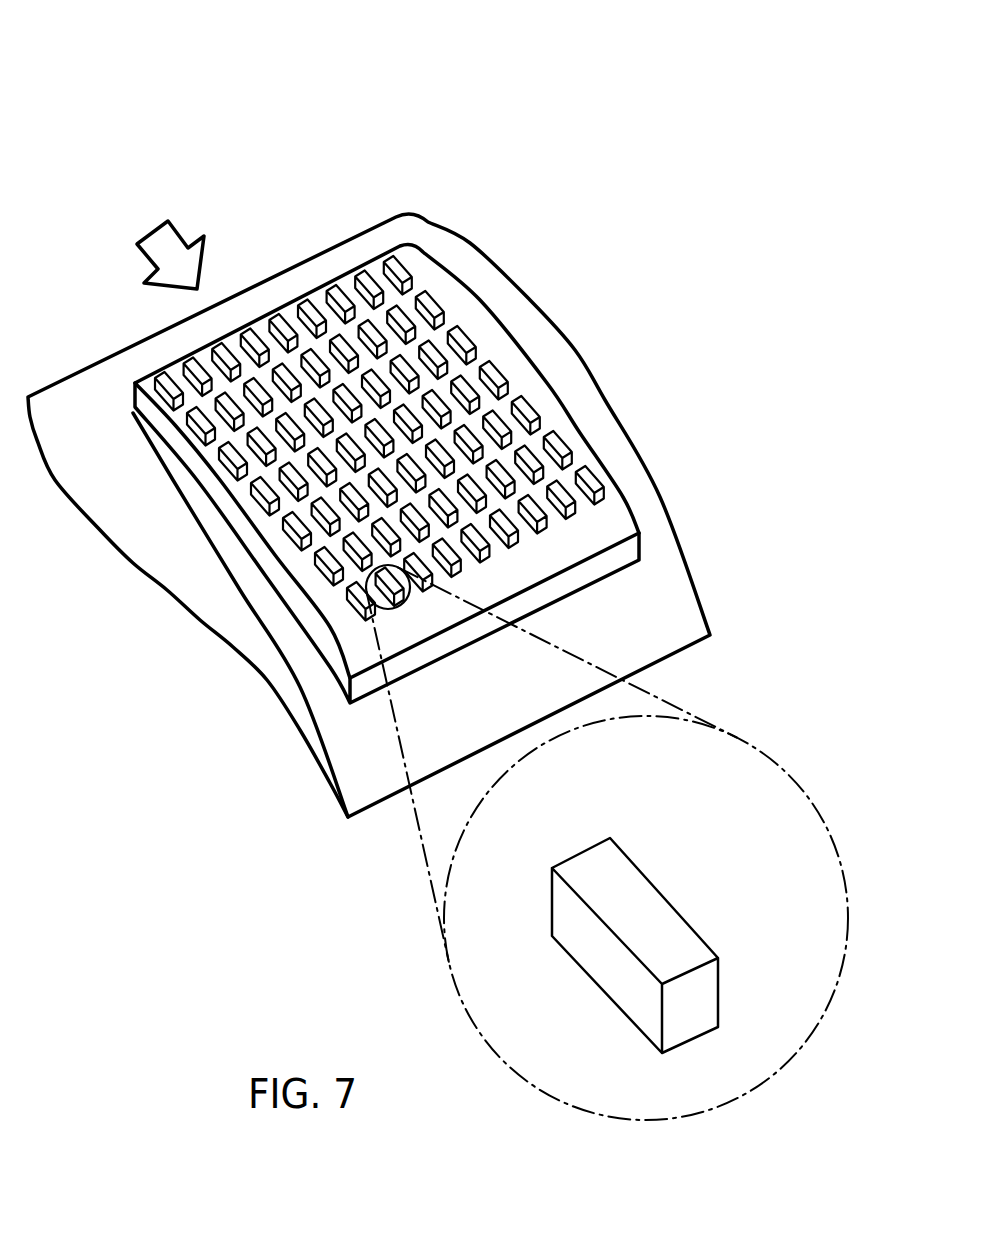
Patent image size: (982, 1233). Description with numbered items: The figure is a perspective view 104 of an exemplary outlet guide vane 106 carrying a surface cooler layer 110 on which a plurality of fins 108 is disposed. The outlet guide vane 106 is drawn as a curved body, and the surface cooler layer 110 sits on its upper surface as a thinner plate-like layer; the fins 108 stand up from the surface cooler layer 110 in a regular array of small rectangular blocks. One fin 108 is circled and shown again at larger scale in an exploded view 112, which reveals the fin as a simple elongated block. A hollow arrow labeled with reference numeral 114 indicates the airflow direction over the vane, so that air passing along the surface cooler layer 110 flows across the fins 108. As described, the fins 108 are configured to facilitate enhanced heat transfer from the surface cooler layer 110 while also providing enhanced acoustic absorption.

The perspective view 104 is at (158, 73).
The outlet guide vane 106 is at (652, 542).
The fins 108 is at (496, 374).
The surface cooler layer 110 is at (205, 490).
The exploded view 112 is at (768, 752).
The airflow direction 114 is at (160, 236).